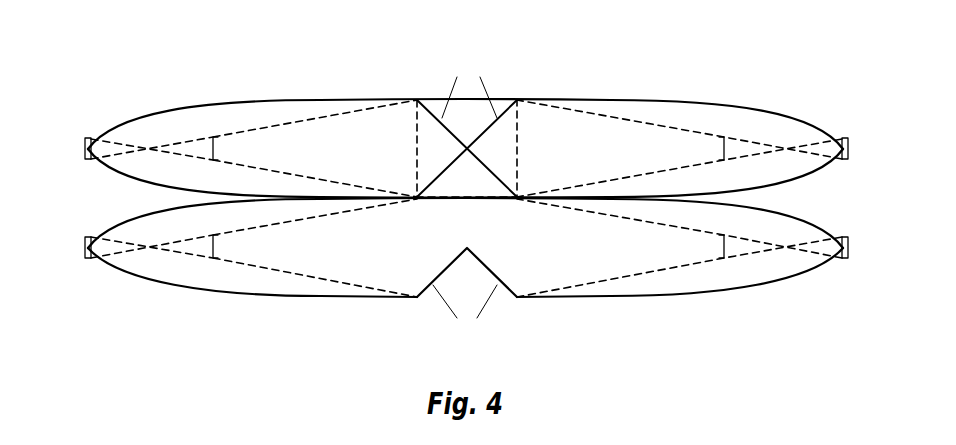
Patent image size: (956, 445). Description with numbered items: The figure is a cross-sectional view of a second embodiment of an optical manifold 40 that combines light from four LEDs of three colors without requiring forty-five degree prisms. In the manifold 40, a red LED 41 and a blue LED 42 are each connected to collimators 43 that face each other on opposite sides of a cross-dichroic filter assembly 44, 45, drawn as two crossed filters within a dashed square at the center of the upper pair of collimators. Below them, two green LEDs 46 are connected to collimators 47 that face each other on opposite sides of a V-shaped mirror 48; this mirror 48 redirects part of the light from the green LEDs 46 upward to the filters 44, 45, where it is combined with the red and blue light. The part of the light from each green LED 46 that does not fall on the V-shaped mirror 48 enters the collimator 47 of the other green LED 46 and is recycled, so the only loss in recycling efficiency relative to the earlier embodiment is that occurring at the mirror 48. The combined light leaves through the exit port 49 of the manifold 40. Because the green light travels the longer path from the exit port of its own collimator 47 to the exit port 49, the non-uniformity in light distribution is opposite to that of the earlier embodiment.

The optical manifold 40 is at (257, 404).
The red LED 41 is at (85, 158).
The blue LED 42 is at (846, 161).
The collimator 43 is at (233, 103).
The cross-dichroic filter 44 is at (500, 100).
The cross-dichroic filter 45 is at (429, 100).
The green LED 46 is at (87, 260).
The collimator 47 is at (225, 283).
The V-shaped mirror 48 is at (502, 293).
The exit port 49 is at (438, 99).